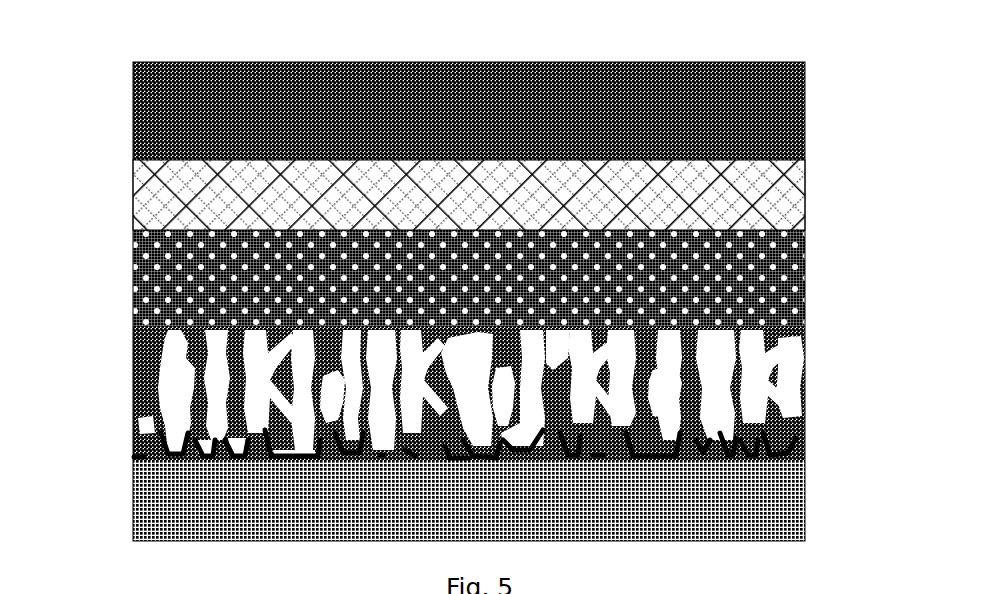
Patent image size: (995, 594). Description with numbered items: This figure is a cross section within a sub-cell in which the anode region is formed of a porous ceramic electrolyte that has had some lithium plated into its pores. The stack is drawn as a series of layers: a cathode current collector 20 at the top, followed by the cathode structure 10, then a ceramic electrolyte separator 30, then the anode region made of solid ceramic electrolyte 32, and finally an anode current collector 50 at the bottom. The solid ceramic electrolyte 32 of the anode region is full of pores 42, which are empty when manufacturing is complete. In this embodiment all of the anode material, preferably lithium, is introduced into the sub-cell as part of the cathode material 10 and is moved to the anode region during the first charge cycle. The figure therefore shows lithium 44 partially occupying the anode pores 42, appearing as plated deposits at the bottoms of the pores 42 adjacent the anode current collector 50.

The cathode structure 10 is at (118, 184).
The cathode current collector 20 is at (803, 115).
The ceramic electrolyte separator 30 is at (118, 271).
The solid ceramic electrolyte 32 is at (138, 335).
The pores 42 is at (158, 392).
The lithium 44 is at (632, 432).
The anode current collector 50 is at (510, 500).